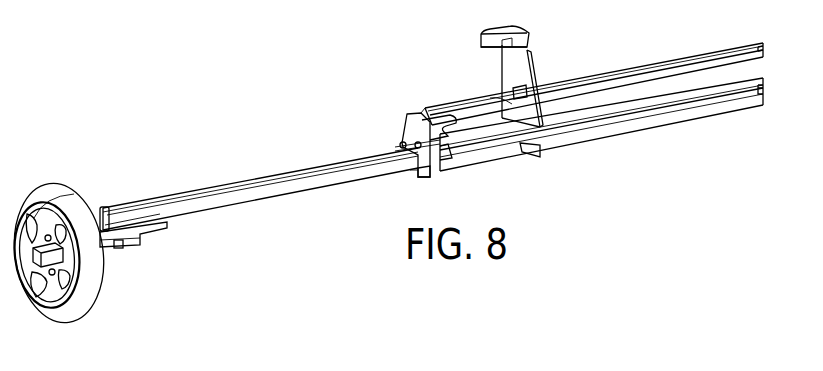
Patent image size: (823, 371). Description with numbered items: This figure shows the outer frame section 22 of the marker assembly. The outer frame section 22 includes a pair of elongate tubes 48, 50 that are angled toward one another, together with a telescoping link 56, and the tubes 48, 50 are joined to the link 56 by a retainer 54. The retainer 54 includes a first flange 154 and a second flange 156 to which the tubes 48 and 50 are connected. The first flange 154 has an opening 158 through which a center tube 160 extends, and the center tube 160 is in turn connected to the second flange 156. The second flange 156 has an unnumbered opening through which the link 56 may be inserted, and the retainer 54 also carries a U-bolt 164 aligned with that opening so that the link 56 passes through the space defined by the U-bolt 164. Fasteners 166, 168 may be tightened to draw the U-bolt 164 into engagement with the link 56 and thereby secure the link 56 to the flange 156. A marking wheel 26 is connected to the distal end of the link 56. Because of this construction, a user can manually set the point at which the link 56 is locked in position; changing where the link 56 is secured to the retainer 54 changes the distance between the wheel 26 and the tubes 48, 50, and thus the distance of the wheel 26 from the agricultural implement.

The outer frame section 22 is at (262, 130).
The marking wheel 26 is at (86, 308).
The elongate tube 48 is at (732, 92).
The elongate tube 50 is at (633, 122).
The retainer 54 is at (436, 81).
The telescoping link 56 is at (262, 196).
The first flange 154 is at (511, 65).
The second flange 156 is at (407, 125).
The opening 158 is at (532, 62).
The center tube 160 is at (485, 110).
The U-bolt 164 is at (416, 180).
The fastener 166 is at (399, 140).
The fastener 168 is at (447, 152).